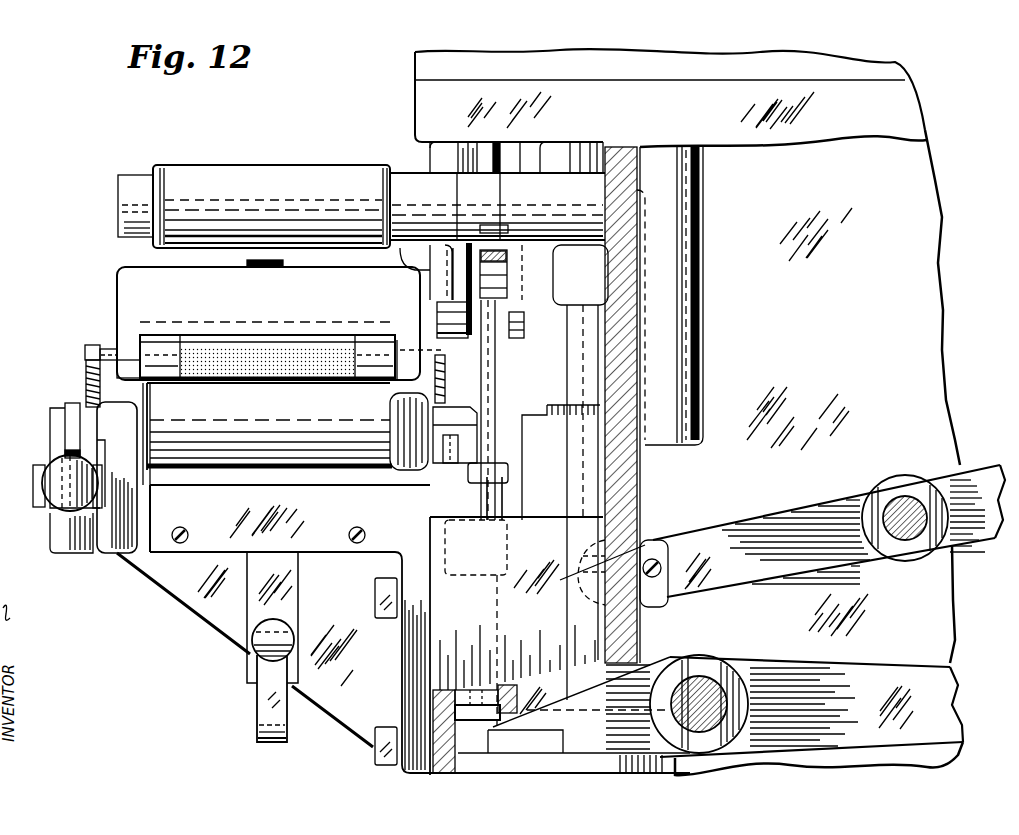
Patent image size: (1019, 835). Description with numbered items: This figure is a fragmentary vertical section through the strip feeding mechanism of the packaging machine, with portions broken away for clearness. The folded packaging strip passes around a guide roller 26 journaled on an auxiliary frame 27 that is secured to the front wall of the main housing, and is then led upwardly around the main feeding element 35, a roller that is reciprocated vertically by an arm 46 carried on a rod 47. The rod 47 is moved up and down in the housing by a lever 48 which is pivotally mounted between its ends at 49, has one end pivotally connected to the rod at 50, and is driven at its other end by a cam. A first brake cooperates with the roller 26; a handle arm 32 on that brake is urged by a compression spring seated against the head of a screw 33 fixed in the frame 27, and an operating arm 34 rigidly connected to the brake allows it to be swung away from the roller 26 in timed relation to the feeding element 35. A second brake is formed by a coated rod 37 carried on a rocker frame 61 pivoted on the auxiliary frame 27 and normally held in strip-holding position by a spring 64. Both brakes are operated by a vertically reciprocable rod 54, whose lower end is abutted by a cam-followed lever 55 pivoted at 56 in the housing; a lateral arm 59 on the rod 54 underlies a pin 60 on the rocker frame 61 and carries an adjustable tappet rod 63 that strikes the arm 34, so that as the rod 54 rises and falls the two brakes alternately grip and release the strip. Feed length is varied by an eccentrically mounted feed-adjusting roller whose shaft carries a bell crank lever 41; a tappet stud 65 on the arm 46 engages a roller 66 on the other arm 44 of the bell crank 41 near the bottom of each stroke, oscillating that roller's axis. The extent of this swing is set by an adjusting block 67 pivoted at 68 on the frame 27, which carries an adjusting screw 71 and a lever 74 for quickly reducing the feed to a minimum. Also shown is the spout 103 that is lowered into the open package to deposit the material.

The main feeding element 35 is at (218, 170).
The arm 46 is at (620, 197).
The spout 103 is at (403, 263).
The rocker frame 61 is at (140, 295).
The rod 37 is at (150, 352).
The guide roller 26 is at (160, 395).
The spring 64 is at (88, 380).
The lever 74 is at (70, 422).
The pivot 68 is at (36, 466).
The adjusting screw 71 is at (55, 485).
The adjusting block 67 is at (50, 523).
The auxiliary frame 27 is at (157, 584).
The screw 33 is at (252, 641).
The handle arm 32 is at (266, 700).
The tappet stud 65 is at (442, 317).
The pin 60 is at (493, 288).
The lateral arm 59 is at (523, 333).
The rod 47 is at (588, 357).
The bell crank lever 41 is at (472, 417).
The arm 44 is at (478, 445).
The adjustable tappet rod 63 is at (500, 454).
The roller 66 is at (465, 472).
The operating arm 34 is at (487, 517).
The vertically reciprocable rod 54 is at (460, 696).
The lever 55 is at (477, 707).
The pivotal connection 50 is at (652, 548).
The lever 48 is at (806, 508).
The pivot 49 is at (905, 495).
The pivot 56 is at (706, 680).